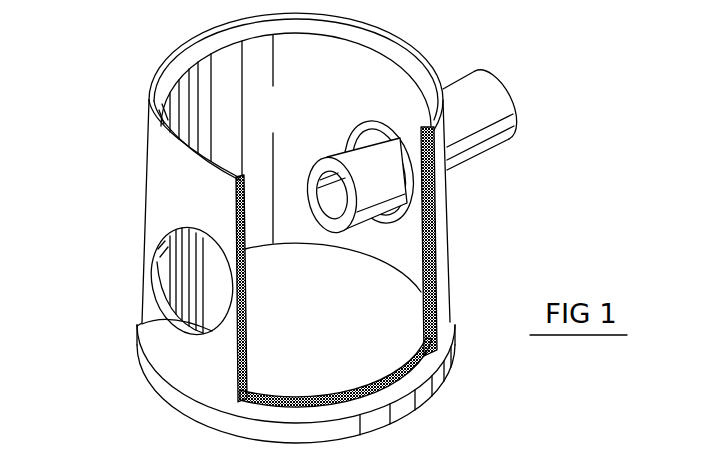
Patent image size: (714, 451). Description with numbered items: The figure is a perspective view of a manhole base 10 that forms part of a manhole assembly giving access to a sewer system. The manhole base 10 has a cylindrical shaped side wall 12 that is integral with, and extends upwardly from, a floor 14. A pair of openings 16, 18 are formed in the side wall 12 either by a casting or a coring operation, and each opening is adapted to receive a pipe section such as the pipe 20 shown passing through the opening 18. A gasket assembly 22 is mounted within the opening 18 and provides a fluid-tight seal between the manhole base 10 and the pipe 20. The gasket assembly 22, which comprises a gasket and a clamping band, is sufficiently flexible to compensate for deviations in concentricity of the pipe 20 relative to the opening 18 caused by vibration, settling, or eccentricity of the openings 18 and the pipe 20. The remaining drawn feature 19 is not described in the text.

The manhole base 10 is at (130, 436).
The side wall 12 is at (160, 159).
The floor 14 is at (323, 290).
The opening 16 is at (181, 256).
The opening 18 is at (373, 120).
The wall-to-base junction 19 is at (141, 323).
The pipe section 20 is at (476, 142).
The gasket assembly 22 is at (333, 126).